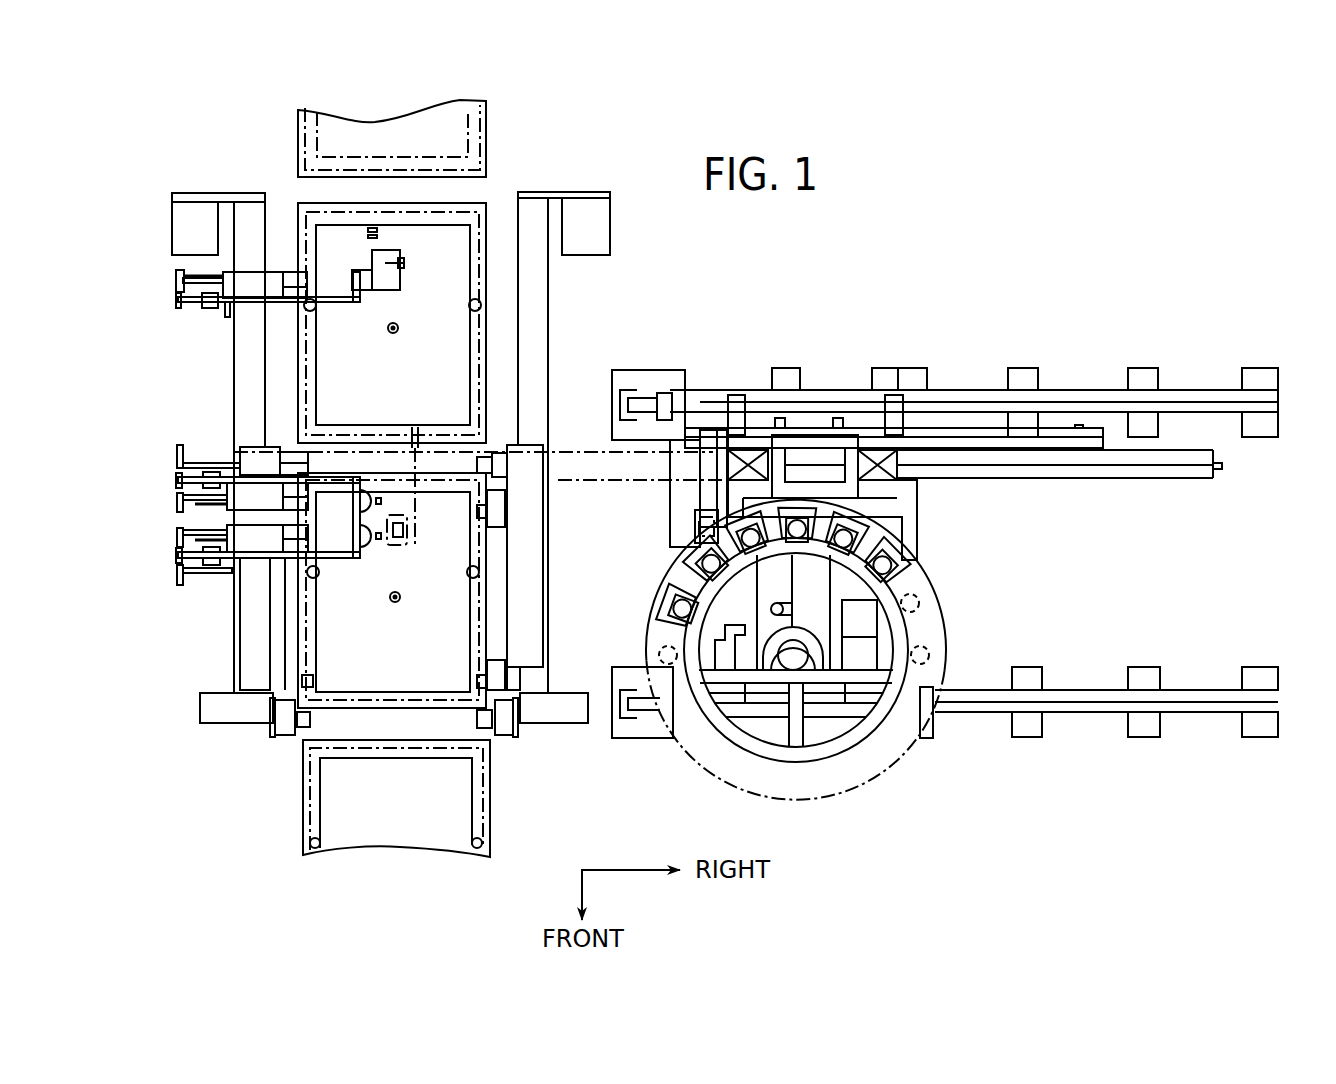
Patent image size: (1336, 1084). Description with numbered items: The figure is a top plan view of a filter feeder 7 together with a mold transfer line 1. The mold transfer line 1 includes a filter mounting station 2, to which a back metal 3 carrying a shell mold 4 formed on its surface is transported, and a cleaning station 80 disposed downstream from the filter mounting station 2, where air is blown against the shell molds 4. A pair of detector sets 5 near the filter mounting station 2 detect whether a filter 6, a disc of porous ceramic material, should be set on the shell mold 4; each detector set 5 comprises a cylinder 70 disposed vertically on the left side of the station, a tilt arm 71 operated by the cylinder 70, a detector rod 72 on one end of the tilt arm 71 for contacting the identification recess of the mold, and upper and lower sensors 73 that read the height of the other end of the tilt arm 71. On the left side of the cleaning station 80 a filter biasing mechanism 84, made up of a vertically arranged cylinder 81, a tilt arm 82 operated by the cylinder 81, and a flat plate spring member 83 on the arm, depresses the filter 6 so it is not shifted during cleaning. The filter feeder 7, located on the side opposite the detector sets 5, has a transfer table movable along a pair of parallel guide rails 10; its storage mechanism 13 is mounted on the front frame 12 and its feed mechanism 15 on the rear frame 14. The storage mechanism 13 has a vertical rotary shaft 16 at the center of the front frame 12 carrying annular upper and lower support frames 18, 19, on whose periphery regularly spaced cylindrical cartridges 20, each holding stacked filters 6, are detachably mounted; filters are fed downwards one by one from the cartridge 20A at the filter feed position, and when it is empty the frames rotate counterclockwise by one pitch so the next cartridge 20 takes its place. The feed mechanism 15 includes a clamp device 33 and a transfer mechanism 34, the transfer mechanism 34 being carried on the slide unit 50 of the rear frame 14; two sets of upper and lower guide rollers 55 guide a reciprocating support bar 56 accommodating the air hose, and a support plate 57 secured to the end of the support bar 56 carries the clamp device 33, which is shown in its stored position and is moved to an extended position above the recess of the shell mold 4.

The mold transfer line 1 is at (297, 842).
The filter mounting station 2 is at (405, 656).
The back metal 3 is at (363, 720).
The shell mold 4 is at (422, 694).
The detector sets 5 is at (220, 450).
The filter 6 is at (403, 264).
The filter feeder 7 is at (942, 290).
The guide rails 10 is at (1193, 390).
The front frame 12 is at (830, 713).
The storage mechanism 13 is at (799, 668).
The rear frame 14 is at (893, 506).
The feed mechanism 15 is at (974, 539).
The rotary shaft 16 is at (870, 662).
The upper support frame 18 is at (763, 752).
The lower support frame 19 is at (666, 580).
The cylindrical cartridges 20 is at (772, 569).
The cartridge at filter feed position 20A is at (697, 540).
The clamp device 33 is at (402, 553).
The transfer mechanism 34 is at (920, 392).
The slide unit 50 is at (813, 412).
The guide rollers 55 is at (867, 447).
The support bar 56 is at (1075, 479).
The support plate 57 is at (717, 432).
The cylinder 70 is at (210, 575).
The tilt arm 71 is at (267, 560).
The detector rod 72 is at (373, 557).
The sensors 73 is at (177, 537).
The cleaning station 80 is at (410, 396).
The cylinder 81 is at (212, 308).
The tilt arm 82 is at (337, 303).
The spring member 83 is at (388, 278).
The filter biasing mechanism 84 is at (222, 328).